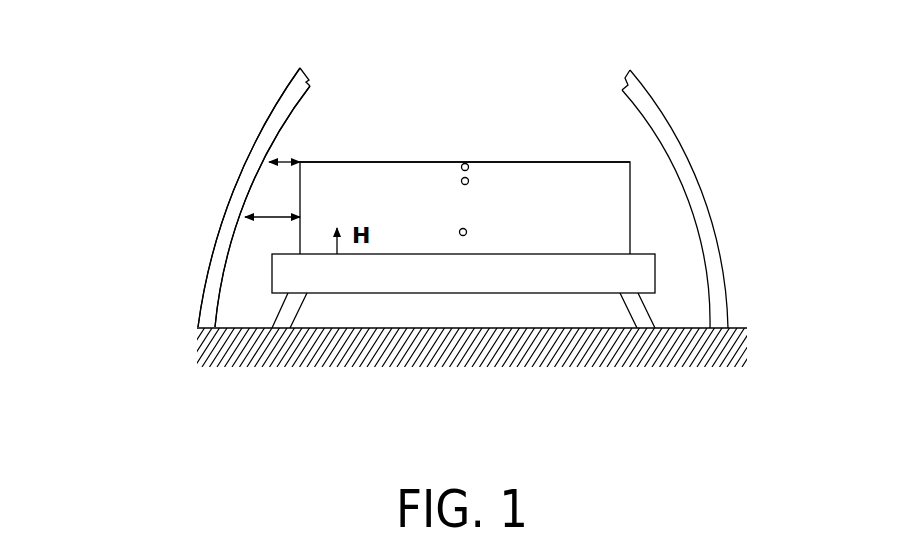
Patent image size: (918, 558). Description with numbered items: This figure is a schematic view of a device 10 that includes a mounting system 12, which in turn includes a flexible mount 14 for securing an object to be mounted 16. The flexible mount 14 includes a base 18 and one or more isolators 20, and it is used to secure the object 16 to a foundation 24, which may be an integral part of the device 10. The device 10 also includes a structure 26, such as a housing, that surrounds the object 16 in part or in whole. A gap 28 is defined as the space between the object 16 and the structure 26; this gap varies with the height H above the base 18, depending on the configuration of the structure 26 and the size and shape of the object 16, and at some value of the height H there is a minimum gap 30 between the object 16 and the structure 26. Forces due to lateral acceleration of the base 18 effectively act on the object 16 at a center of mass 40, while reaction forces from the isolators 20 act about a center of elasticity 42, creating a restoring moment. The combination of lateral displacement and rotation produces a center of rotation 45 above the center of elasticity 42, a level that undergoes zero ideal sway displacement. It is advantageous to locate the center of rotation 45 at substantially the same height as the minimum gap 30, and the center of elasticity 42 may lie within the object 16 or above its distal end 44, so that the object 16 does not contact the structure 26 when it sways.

The device 10 is at (200, 52).
The mounting system 12 is at (190, 256).
The flexible mount 14 is at (680, 288).
The object to be mounted 16 is at (613, 195).
The base 18 is at (578, 283).
The isolators 20 is at (283, 311).
The foundation 24 is at (440, 422).
The structure 26 is at (247, 150).
The gap 28 is at (270, 217).
The minimum gap 30 is at (280, 156).
The center of mass 40 is at (467, 230).
The center of elasticity 42 is at (469, 180).
The distal end 44 is at (350, 162).
The center of rotation 45 is at (465, 163).